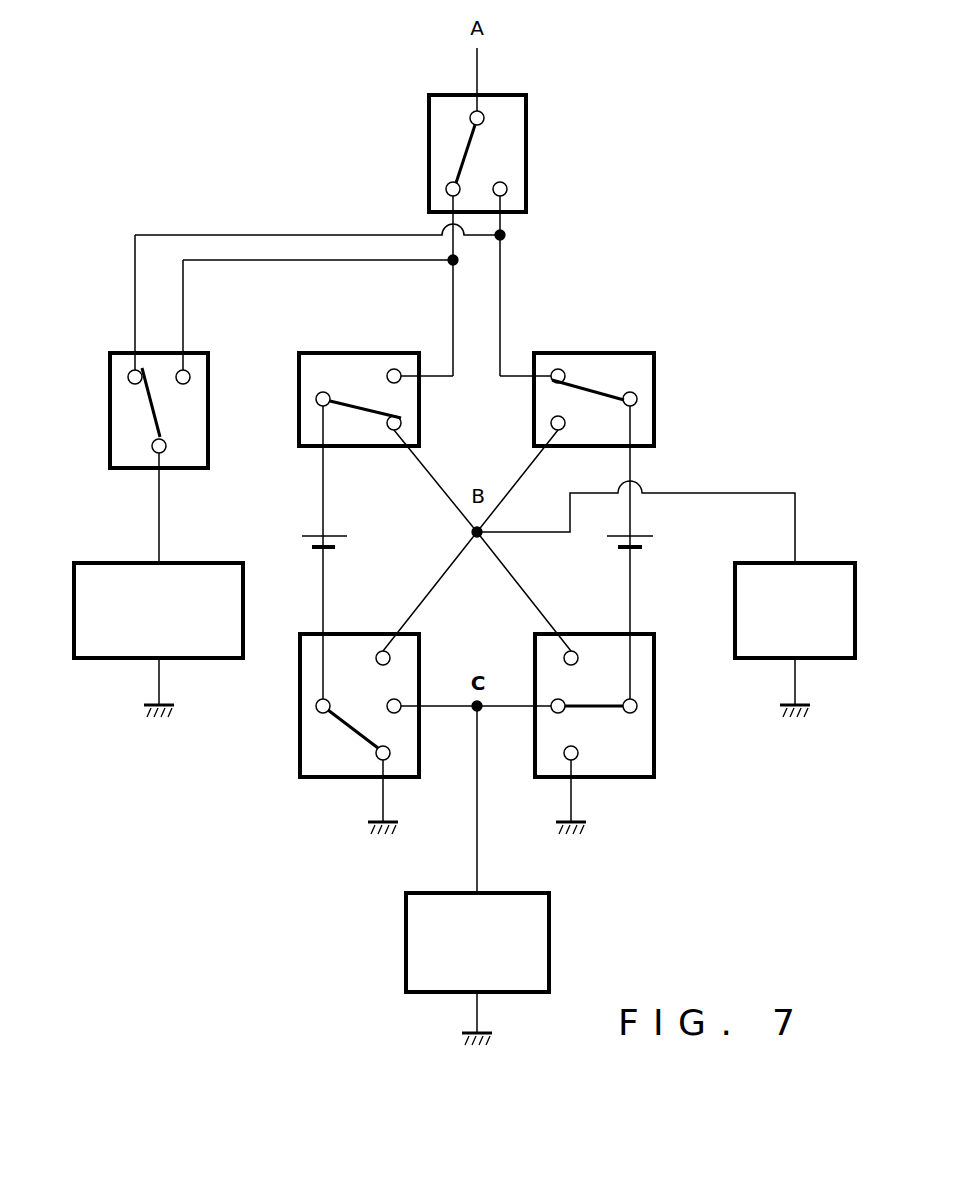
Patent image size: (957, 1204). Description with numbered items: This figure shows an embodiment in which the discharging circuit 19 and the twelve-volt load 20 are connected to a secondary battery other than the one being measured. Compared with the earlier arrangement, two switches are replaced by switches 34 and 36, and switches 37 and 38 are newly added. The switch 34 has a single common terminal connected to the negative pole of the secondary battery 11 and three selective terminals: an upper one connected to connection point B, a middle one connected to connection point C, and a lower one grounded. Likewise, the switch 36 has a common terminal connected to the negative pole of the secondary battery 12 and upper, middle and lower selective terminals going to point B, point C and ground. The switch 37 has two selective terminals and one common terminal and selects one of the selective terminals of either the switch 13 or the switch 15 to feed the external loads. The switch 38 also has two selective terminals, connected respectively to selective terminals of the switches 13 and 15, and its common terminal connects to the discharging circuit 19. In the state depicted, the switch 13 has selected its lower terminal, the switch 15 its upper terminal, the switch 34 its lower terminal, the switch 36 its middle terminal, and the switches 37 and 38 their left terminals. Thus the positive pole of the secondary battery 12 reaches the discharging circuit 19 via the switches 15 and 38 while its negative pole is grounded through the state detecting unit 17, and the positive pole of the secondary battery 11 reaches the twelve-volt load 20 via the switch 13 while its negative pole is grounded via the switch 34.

The secondary battery 11 is at (335, 534).
The secondary battery 12 is at (645, 534).
The switch 13 is at (360, 353).
The switch 15 is at (595, 353).
The state detecting unit 17 is at (500, 893).
The discharging circuit 19 is at (140, 563).
The 12V-load 20 is at (815, 563).
The switch 34 is at (353, 634).
The switch 36 is at (640, 634).
The switch 37 is at (526, 133).
The switch 38 is at (110, 390).